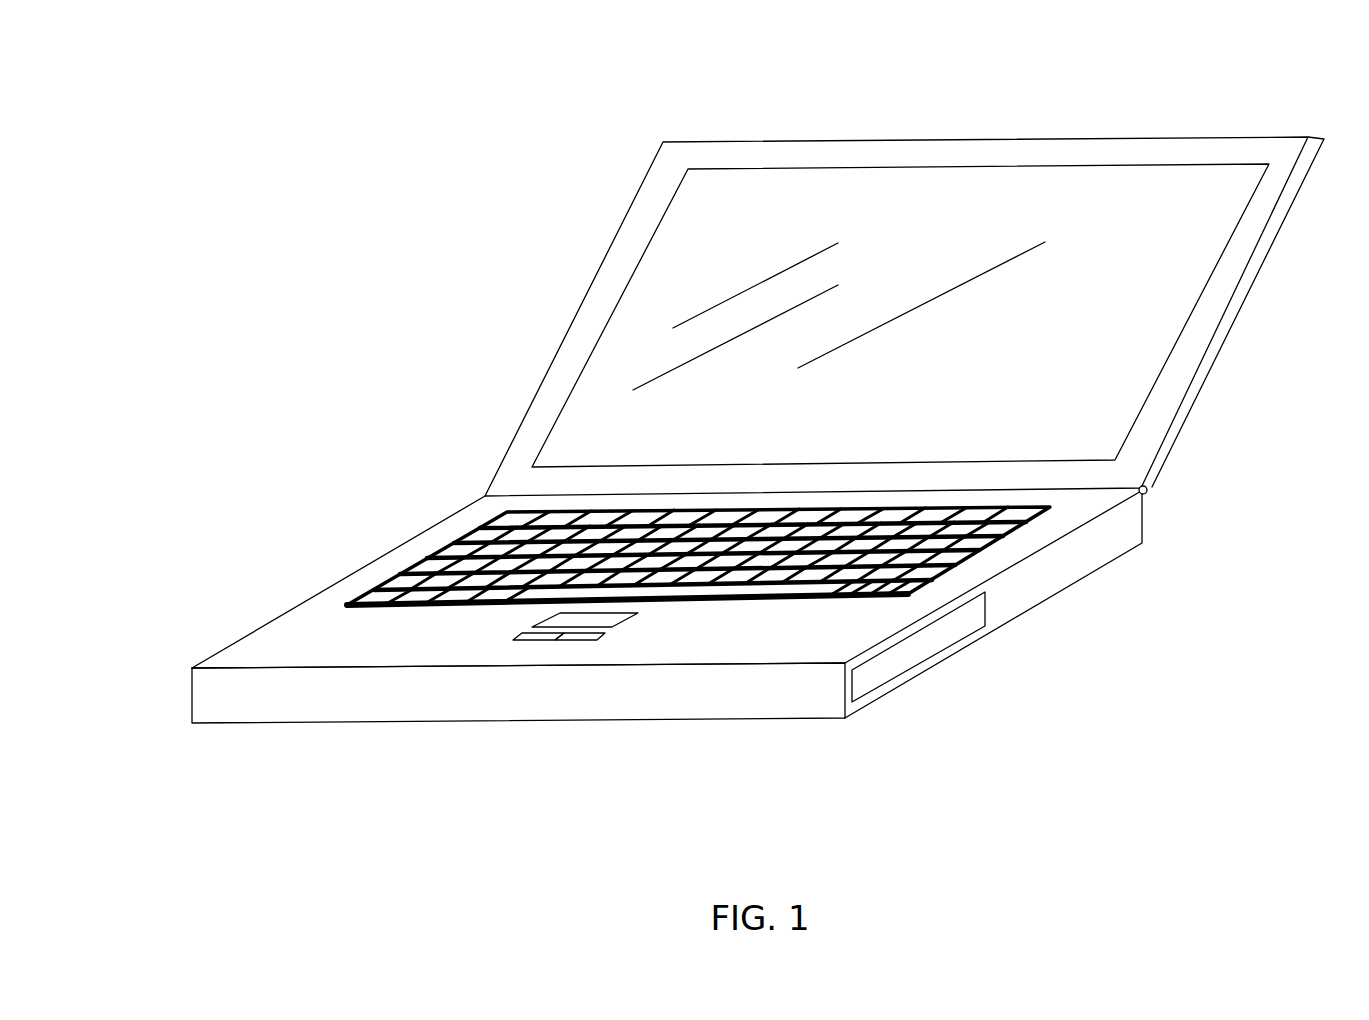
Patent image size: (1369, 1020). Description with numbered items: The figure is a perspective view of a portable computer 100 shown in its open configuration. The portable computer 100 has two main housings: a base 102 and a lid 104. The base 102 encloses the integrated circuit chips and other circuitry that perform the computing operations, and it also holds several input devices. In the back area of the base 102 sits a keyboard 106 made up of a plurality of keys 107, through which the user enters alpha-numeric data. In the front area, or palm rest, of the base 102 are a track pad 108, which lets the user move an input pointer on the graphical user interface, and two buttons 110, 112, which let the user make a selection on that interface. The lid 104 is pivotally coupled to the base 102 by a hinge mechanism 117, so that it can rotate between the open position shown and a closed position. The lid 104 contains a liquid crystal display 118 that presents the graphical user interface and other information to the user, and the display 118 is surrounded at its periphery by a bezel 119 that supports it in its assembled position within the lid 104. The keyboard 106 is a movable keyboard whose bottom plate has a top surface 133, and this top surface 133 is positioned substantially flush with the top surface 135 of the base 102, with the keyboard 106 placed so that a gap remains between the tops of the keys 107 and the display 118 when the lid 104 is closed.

The portable computer 100 is at (447, 188).
The base 102 is at (283, 615).
The lid 104 is at (549, 372).
The keyboard 106 is at (973, 548).
The keys 107 is at (473, 535).
The track pad 108 is at (588, 621).
The button 110 is at (532, 640).
The button 112 is at (590, 640).
The hinge mechanism 117 is at (1147, 490).
The liquid crystal display (LCD) 118 is at (755, 220).
The bezel 119 is at (948, 147).
The top surface of the bottom plate 133 is at (908, 591).
The top surface of the base 135 is at (800, 645).